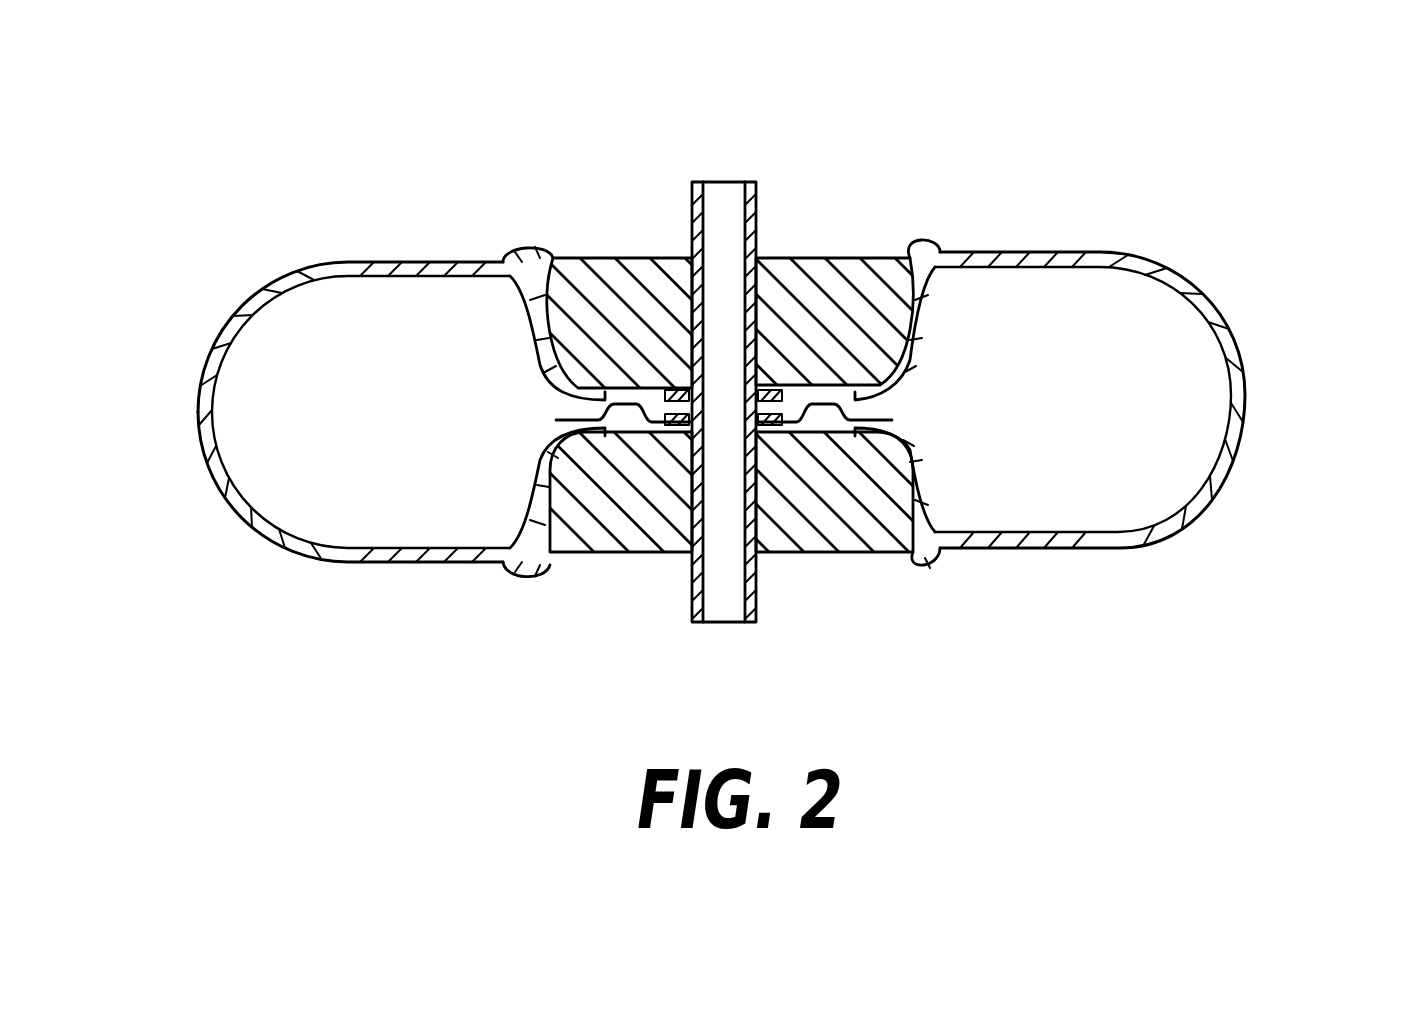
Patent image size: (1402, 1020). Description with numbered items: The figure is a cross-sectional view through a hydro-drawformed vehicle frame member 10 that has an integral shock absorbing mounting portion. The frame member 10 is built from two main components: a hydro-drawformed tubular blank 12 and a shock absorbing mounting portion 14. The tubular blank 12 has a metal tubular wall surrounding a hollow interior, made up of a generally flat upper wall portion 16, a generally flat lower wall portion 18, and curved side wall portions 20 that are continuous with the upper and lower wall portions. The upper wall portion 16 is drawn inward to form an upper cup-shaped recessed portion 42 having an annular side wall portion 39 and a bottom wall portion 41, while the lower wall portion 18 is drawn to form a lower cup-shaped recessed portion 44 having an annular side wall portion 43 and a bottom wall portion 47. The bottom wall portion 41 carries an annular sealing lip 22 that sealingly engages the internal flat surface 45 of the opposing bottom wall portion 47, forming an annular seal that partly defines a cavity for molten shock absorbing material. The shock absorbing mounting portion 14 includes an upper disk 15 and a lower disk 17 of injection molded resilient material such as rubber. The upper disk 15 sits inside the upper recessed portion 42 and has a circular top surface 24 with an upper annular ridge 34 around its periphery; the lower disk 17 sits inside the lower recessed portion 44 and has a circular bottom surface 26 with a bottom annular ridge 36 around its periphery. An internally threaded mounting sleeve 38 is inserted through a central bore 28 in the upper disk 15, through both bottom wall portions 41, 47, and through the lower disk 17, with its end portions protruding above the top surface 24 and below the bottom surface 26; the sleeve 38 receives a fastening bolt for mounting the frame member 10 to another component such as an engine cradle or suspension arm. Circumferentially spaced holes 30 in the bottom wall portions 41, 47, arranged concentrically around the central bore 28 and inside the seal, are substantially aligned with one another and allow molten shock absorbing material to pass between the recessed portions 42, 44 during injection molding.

The hydro-drawformed vehicle frame member 10 is at (300, 220).
The hydro-drawformed tubular blank 12 is at (1226, 306).
The shock absorbing mounting portion 14 is at (832, 256).
The upper disk 15 is at (848, 300).
The upper wall portion 16 is at (405, 260).
The lower disk 17 is at (862, 515).
The lower wall portion 18 is at (395, 562).
The curved side wall portions 20 is at (208, 368).
The annular sealing lip 22 is at (900, 395).
The top surface 24 is at (598, 258).
The bottom surface 26 is at (830, 558).
The central bore 28 is at (763, 565).
The holes 30 is at (655, 505).
The upper annular ridge 34 is at (525, 248).
The bottom annular ridge 36 is at (520, 578).
The internally threaded mounting sleeve 38 is at (758, 195).
The drawn annular side wall portion 39 is at (545, 340).
The bottom wall portion 41 is at (565, 420).
The upper cup-shaped recessed portion 42 is at (535, 330).
The drawn annular side wall portion 43 is at (965, 548).
The lower cup-shaped recessed portion 44 is at (912, 470).
The internal flat surface 45 is at (905, 410).
The bottom wall portion 47 is at (904, 437).